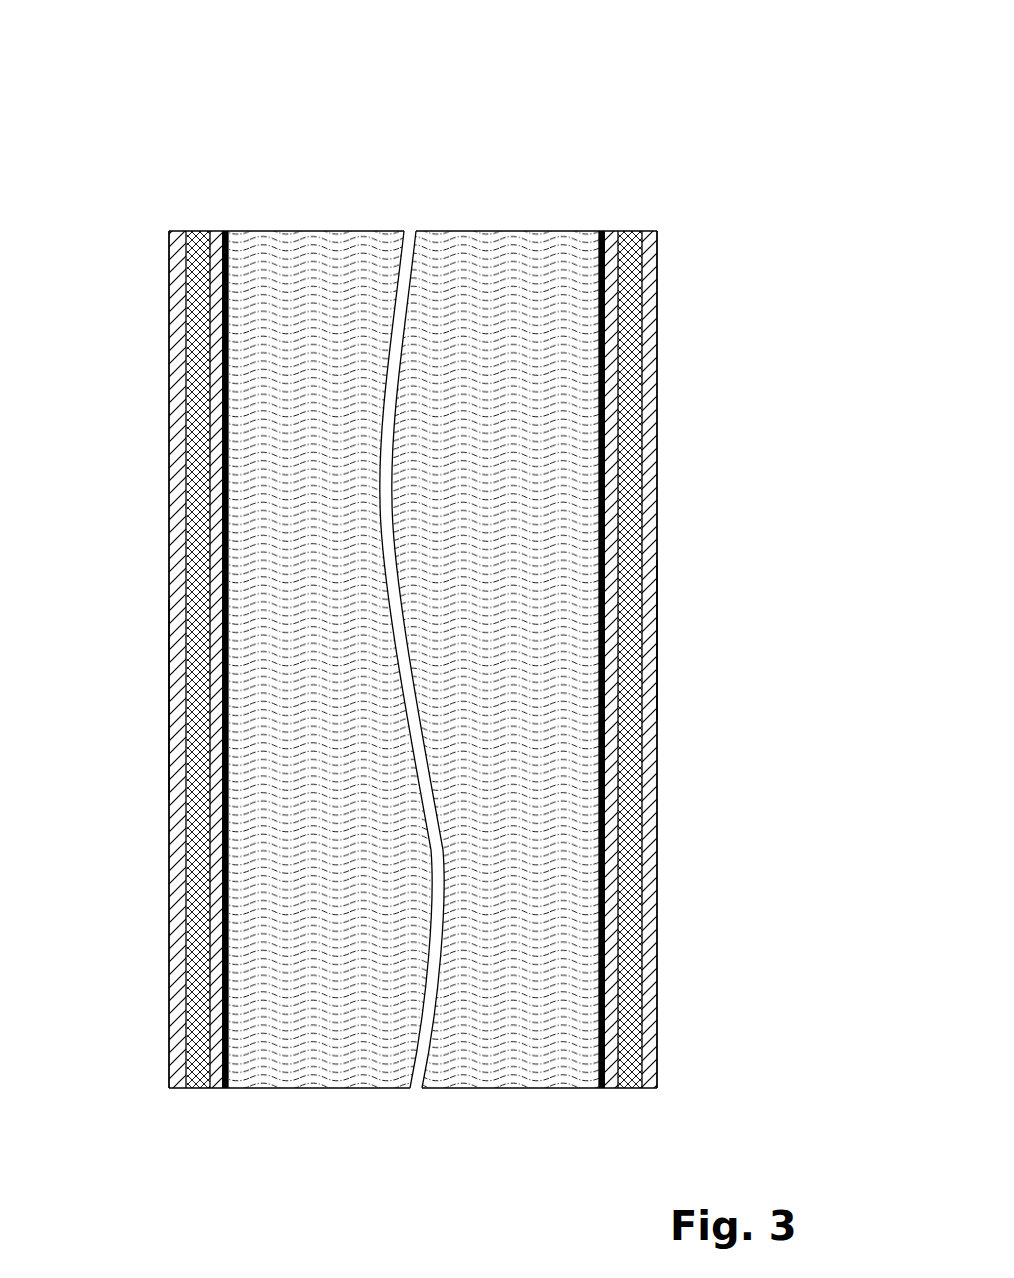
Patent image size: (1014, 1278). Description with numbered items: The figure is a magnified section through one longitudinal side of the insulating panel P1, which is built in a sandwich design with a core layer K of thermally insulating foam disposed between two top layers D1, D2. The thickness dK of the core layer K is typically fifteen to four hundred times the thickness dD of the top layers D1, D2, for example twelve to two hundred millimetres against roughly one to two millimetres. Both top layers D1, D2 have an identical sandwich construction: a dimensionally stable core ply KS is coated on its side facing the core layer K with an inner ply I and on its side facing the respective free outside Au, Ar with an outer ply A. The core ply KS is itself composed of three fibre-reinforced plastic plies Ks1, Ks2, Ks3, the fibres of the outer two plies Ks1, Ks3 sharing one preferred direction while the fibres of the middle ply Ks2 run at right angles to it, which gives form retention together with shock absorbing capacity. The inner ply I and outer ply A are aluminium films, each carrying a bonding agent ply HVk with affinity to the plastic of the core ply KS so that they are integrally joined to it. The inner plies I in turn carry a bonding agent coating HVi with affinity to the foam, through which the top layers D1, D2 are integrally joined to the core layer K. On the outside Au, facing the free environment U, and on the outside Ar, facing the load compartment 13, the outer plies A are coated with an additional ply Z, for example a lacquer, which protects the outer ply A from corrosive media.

The core layer K is at (338, 248).
The insulating panel P1 is at (505, 168).
The outer ply A is at (177, 403).
The core ply KS is at (182, 448).
The fibre-reinforced plastic ply Ks1 is at (190, 1089).
The fibre-reinforced plastic ply Ks2 is at (200, 1089).
The fibre-reinforced plastic ply Ks3 is at (207, 1089).
The inner ply I is at (185, 498).
The bonding agent ply HVk is at (170, 238).
The bonding agent coating HVi is at (226, 250).
The top layer D1 is at (227, 218).
The top layer D2 is at (655, 218).
The additional ply Z is at (168, 661).
The outside Au is at (167, 707).
The outside Ar is at (656, 640).
The free environment U is at (33, 548).
The load compartment 13 is at (771, 683).
The thickness of the top layers dD is at (170, 1072).
The thickness of the core layer dK is at (599, 1072).